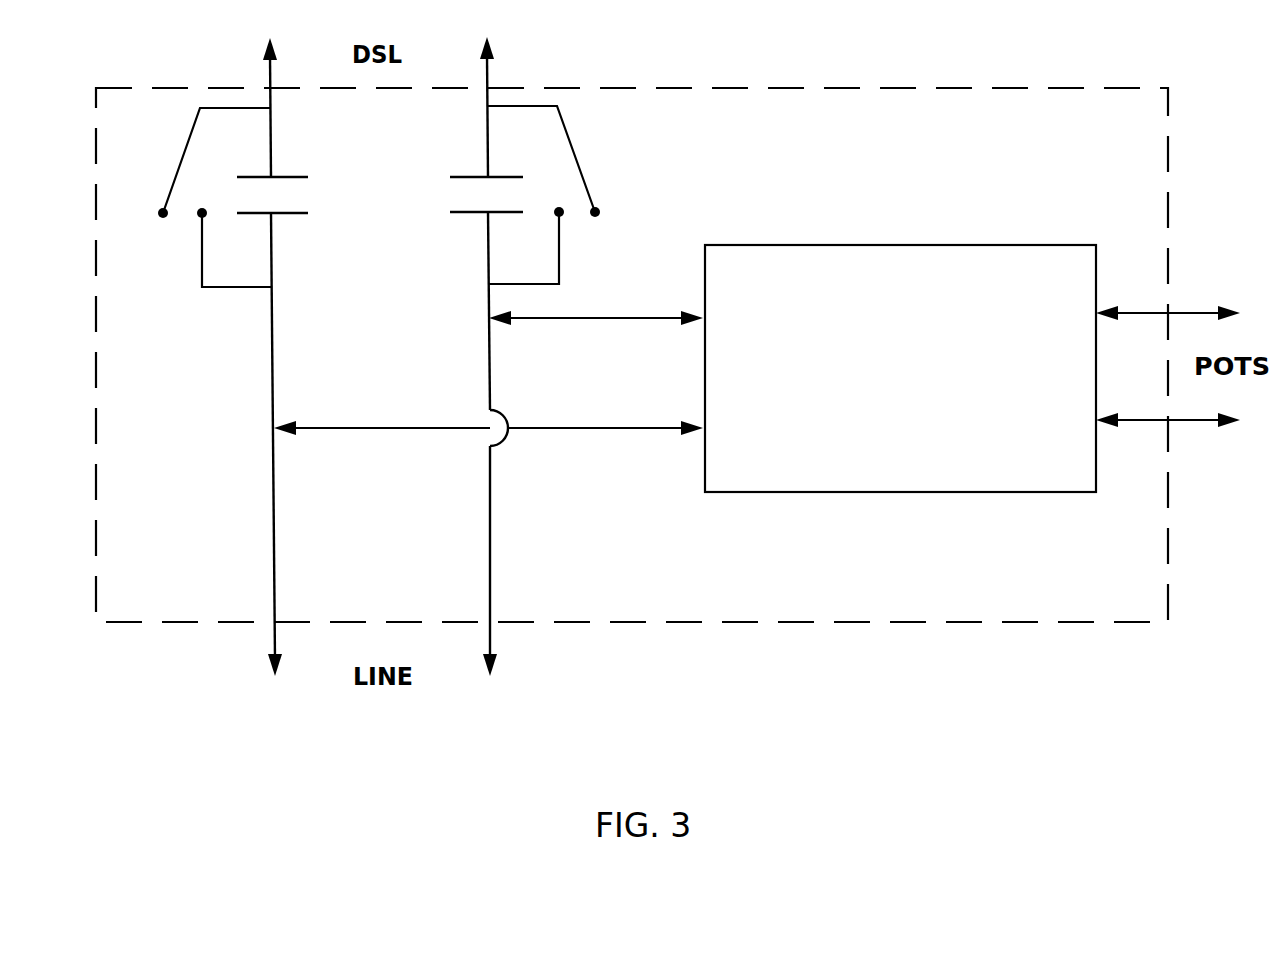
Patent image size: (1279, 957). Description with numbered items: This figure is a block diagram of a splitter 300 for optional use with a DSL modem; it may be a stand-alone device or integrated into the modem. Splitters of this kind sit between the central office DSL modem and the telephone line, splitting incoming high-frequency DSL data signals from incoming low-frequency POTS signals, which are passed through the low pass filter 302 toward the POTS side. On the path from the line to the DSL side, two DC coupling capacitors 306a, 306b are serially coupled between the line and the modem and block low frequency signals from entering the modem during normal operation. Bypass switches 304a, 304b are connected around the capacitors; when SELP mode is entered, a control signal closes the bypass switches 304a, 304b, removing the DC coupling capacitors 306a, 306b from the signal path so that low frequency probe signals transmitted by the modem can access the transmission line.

The splitter 300 is at (919, 135).
The low pass filter 302 is at (878, 414).
The bypass switch 304a is at (158, 249).
The bypass switch 304b is at (617, 198).
The DC coupling capacitor 306a is at (311, 250).
The DC coupling capacitor 306b is at (464, 246).